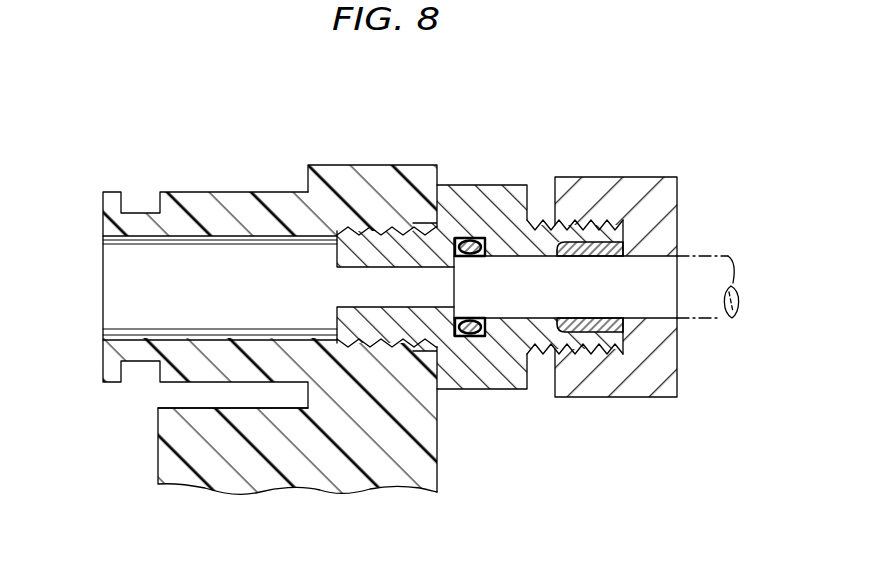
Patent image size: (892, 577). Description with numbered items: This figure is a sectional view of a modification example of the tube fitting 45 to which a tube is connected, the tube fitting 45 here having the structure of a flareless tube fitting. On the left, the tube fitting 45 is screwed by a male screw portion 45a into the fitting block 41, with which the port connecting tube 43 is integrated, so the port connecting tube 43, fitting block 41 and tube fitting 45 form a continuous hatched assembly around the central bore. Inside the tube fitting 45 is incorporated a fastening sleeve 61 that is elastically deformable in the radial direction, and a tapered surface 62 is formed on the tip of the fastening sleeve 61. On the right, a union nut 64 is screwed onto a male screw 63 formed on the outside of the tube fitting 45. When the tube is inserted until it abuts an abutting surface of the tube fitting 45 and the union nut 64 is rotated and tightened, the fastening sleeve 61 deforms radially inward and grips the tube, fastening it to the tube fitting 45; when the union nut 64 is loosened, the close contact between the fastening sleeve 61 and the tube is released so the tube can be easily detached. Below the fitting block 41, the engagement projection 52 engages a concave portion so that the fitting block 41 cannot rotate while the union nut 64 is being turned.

The fitting block 41 is at (375, 180).
The port connecting tube 43 is at (210, 200).
The tube fitting 45 is at (480, 299).
The male screw portion 45a is at (393, 345).
The engagement projection 52 is at (222, 486).
The fastening sleeve 61 is at (603, 335).
The tapered surface 62 is at (545, 347).
The male screw 63 is at (538, 222).
The union nut 64 is at (632, 190).